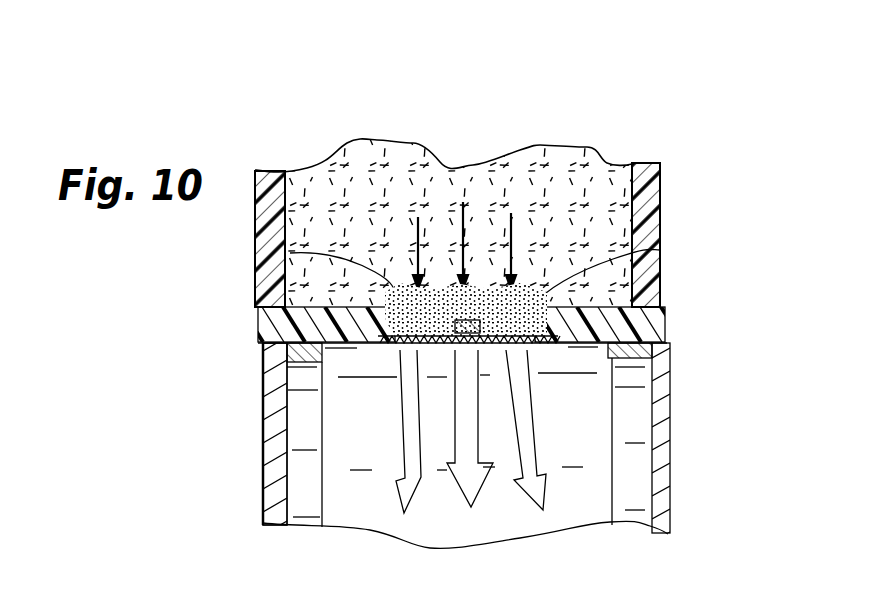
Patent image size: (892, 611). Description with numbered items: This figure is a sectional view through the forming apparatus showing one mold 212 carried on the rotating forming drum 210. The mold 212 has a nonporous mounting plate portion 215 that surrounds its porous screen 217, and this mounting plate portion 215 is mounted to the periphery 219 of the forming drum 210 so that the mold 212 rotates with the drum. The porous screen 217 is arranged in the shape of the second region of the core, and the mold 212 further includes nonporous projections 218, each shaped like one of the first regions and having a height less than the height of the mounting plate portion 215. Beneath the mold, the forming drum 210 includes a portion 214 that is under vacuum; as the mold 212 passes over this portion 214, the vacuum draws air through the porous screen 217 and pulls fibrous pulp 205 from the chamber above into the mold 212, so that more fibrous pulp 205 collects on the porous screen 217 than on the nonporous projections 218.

The fibrous pulp 205 is at (368, 190).
The nonporous projections 218 is at (467, 303).
The porous screen 217 is at (258, 260).
The mold 212 is at (667, 305).
The nonporous mounting plate portion 215 is at (260, 322).
The portion under vacuum 214 is at (572, 437).
The periphery of the forming drum 219 is at (263, 352).
The rotating forming drum 210 is at (267, 474).